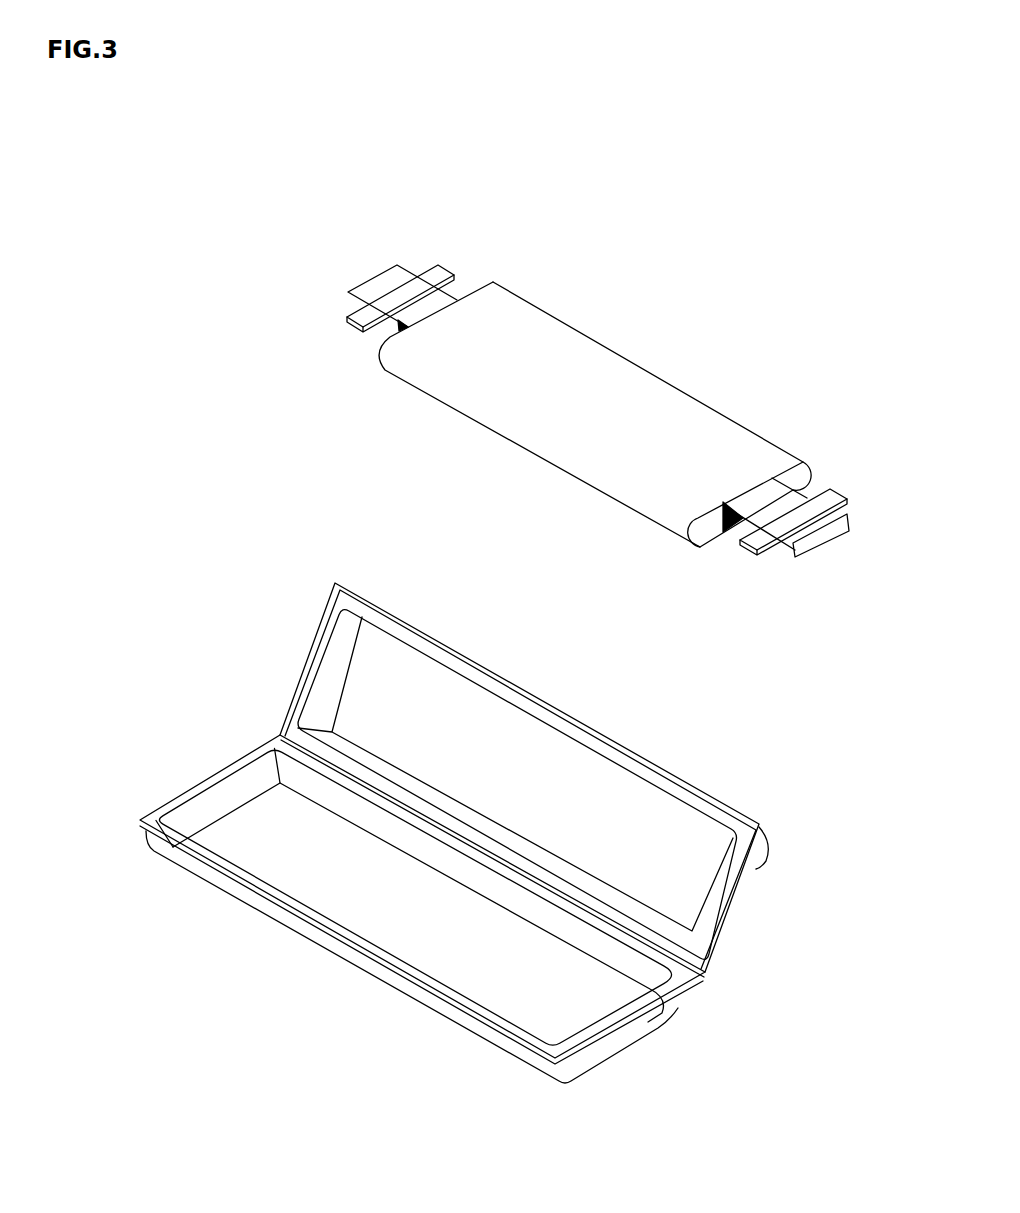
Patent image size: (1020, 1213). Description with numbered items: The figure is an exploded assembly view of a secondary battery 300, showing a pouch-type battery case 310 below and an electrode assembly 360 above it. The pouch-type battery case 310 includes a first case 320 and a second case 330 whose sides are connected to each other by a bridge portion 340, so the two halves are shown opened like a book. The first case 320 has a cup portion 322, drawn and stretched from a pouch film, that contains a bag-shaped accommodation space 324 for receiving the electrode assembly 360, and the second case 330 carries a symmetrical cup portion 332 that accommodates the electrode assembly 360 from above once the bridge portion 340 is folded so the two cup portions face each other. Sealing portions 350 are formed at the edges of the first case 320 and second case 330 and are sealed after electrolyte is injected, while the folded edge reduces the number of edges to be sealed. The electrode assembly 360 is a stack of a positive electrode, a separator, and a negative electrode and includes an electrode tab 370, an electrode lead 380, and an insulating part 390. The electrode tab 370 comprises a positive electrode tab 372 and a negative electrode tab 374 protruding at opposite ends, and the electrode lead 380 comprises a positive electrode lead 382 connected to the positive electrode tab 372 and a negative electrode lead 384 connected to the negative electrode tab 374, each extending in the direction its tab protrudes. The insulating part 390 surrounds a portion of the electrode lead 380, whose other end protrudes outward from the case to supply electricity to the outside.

The secondary battery 300 is at (158, 236).
The pouch-type battery case 310 is at (778, 768).
The first case 320 is at (221, 772).
The cup portion 322 is at (607, 1052).
The accommodation space 324 is at (571, 1003).
The second case 330 is at (312, 661).
The cup portion 332 is at (770, 862).
The bridge portion 340 is at (712, 972).
The sealing portion 350 is at (727, 902).
The electrode assembly 360 is at (819, 305).
The electrode tab 370 is at (740, 319).
The positive electrode tab 372 is at (757, 492).
The negative electrode tab 374 is at (491, 284).
The electrode lead 380 is at (661, 620).
The positive electrode lead 382 is at (782, 551).
The negative electrode lead 384 is at (347, 292).
The insulating part 390 is at (434, 262).